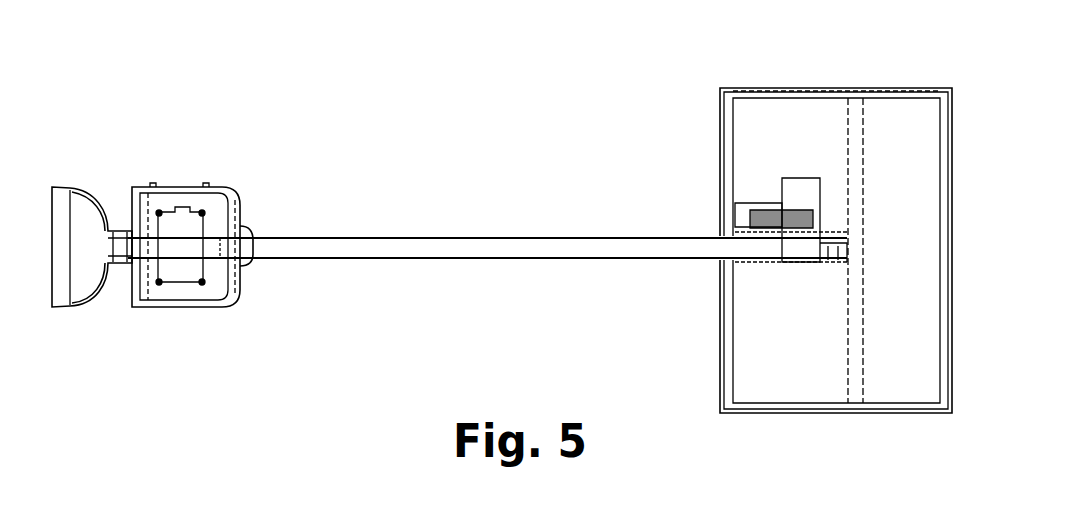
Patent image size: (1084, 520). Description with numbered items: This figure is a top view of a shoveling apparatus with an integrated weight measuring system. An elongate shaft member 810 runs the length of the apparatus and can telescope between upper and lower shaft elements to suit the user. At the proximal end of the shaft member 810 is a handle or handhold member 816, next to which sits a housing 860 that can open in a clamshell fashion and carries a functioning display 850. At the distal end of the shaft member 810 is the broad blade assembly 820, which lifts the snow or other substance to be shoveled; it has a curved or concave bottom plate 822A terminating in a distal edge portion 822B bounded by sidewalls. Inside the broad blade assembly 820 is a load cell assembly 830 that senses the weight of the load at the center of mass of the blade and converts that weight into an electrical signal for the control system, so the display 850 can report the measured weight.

The elongate shaft member 810 is at (292, 259).
The handle or handhold member 816 is at (63, 290).
The broad blade assembly 820 is at (887, 424).
The curved or concave bottom plate 822A is at (914, 90).
The distal edge portion 822B is at (286, 8).
The load cell assembly 830 is at (803, 172).
The display 850 is at (192, 218).
The housing 860 is at (178, 308).